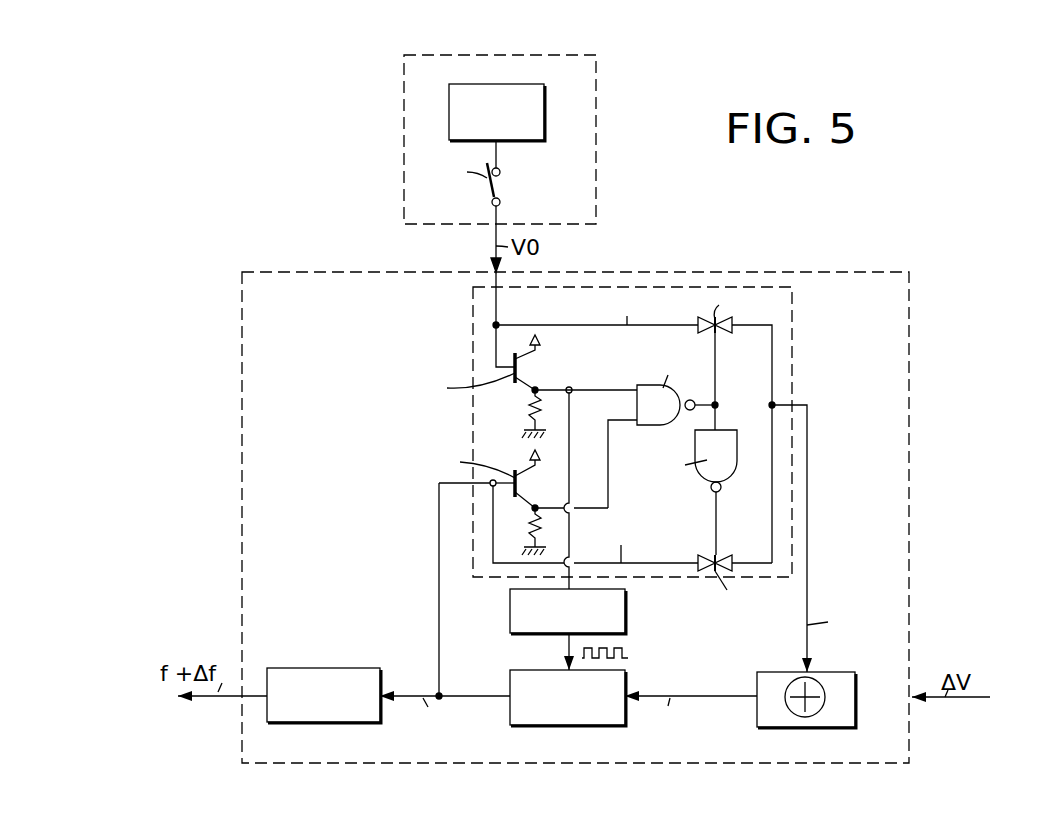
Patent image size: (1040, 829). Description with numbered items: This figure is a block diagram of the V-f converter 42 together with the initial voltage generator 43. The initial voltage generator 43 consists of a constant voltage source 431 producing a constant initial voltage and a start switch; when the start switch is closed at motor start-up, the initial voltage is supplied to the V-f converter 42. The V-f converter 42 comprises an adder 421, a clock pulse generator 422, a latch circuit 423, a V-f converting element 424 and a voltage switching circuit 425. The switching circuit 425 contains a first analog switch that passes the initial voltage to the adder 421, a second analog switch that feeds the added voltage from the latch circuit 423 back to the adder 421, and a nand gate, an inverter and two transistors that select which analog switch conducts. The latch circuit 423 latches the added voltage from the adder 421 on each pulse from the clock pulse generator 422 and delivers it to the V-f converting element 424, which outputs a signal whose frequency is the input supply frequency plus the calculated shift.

The V-f converter 42 is at (909, 343).
The initial voltage generator 43 is at (527, 163).
The constant voltage source 431 is at (543, 137).
The adder 421 is at (797, 725).
The clock pulse generator 422 is at (625, 613).
The latch circuit 423 is at (565, 720).
The V-f converting element 424 is at (347, 673).
The voltage switching circuit 425 is at (792, 335).